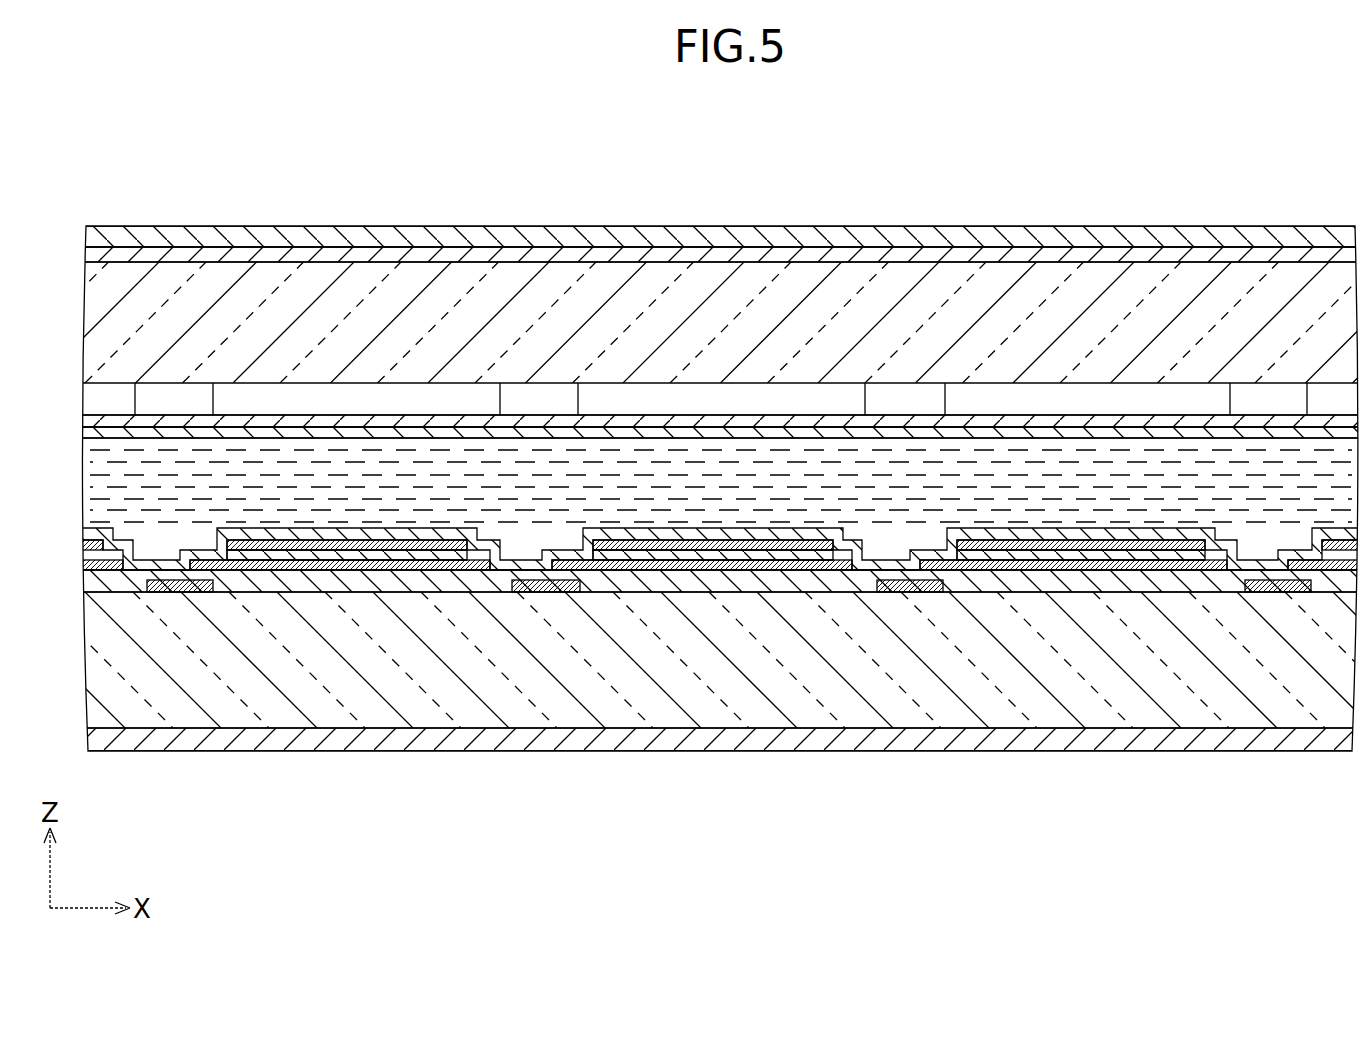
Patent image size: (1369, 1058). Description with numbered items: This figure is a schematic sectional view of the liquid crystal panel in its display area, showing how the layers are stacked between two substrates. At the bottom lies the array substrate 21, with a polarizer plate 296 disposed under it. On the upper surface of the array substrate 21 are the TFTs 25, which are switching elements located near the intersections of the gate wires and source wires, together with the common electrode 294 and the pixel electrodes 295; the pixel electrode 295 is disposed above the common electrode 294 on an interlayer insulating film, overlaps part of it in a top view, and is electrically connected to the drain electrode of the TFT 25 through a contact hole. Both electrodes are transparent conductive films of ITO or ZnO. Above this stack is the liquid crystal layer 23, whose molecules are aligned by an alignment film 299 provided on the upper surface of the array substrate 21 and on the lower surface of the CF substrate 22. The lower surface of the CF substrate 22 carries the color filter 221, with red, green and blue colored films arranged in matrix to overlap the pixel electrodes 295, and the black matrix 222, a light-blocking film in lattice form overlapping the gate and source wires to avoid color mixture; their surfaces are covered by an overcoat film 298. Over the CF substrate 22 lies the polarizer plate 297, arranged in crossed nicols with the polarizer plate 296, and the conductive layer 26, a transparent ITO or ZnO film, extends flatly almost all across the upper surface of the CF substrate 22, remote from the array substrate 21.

The first substrate 21 is at (835, 685).
The second substrate 22 is at (595, 285).
The liquid crystal layer 23 is at (1150, 460).
The TFT 25 is at (177, 592).
The conductive layer 26 is at (1290, 250).
The color filter 221 is at (1005, 398).
The black matrix 222 is at (185, 398).
The common electrode 294 is at (287, 565).
The pixel electrode 295 is at (362, 548).
The polarizer plate 296 is at (768, 748).
The polarizer plate 297 is at (752, 245).
The overcoat film 298 is at (778, 420).
The alignment film 299 is at (843, 432).